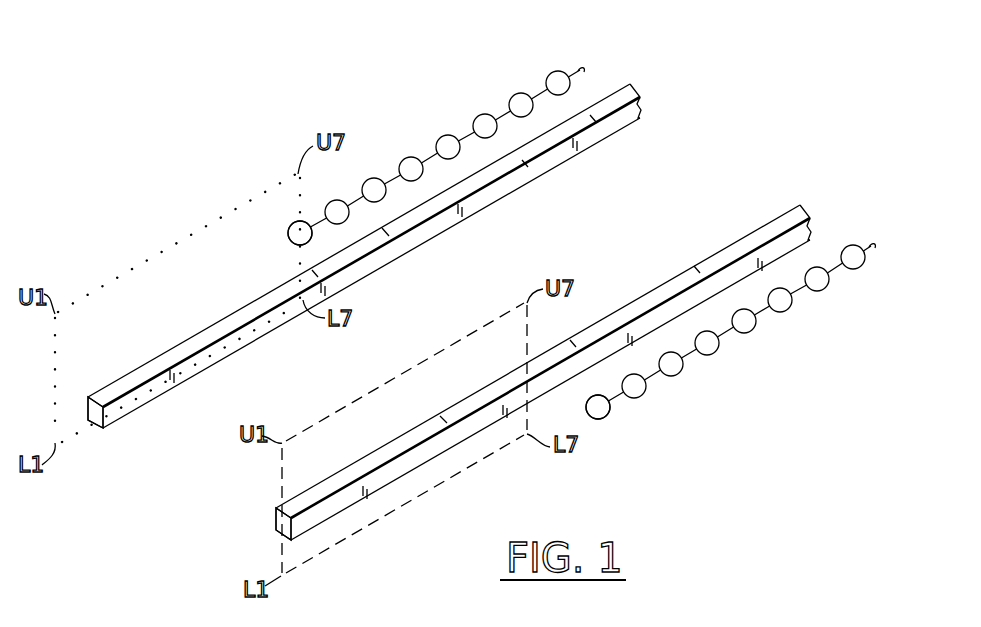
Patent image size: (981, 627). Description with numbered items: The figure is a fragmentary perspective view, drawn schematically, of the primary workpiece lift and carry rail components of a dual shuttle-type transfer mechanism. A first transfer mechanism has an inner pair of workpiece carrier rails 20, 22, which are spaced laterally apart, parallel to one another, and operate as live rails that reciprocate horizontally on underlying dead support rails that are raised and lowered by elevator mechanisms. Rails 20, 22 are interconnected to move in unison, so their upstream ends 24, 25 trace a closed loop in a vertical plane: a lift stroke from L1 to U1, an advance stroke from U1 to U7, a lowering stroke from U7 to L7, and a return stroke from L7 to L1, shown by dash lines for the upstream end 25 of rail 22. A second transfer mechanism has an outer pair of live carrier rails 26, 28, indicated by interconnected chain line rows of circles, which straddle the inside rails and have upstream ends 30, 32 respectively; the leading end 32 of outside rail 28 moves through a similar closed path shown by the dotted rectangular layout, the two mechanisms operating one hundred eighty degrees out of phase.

The workpiece carrier rail 20 is at (639, 83).
The workpiece carrier rail 22 is at (803, 206).
The upstream end of live rail 24 is at (101, 431).
The upstream end of live rail 25 is at (276, 526).
The live carrier rail 26 is at (725, 336).
The live carrier rail 28 is at (431, 158).
The upstream end of outside rail 30 is at (607, 417).
The upstream end of outside rail 32 is at (289, 238).